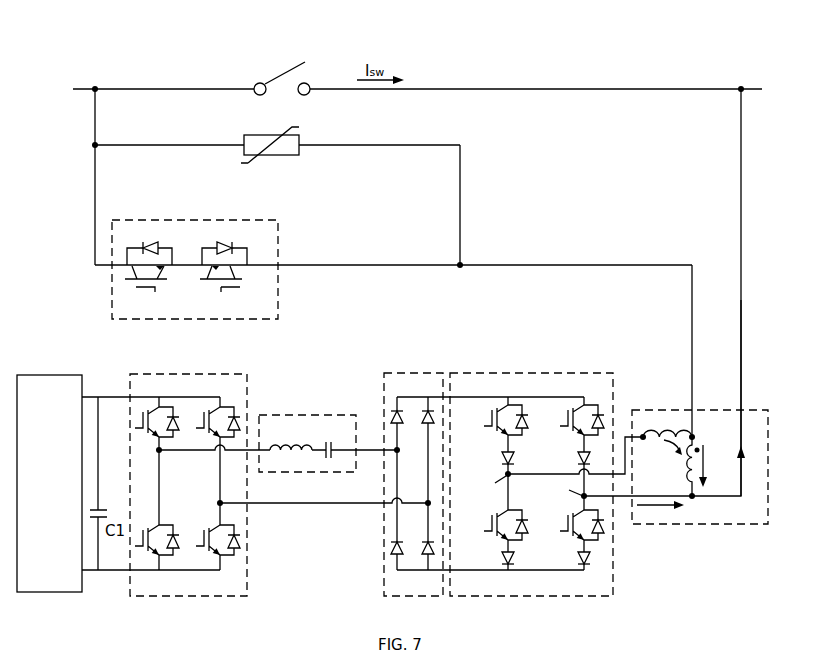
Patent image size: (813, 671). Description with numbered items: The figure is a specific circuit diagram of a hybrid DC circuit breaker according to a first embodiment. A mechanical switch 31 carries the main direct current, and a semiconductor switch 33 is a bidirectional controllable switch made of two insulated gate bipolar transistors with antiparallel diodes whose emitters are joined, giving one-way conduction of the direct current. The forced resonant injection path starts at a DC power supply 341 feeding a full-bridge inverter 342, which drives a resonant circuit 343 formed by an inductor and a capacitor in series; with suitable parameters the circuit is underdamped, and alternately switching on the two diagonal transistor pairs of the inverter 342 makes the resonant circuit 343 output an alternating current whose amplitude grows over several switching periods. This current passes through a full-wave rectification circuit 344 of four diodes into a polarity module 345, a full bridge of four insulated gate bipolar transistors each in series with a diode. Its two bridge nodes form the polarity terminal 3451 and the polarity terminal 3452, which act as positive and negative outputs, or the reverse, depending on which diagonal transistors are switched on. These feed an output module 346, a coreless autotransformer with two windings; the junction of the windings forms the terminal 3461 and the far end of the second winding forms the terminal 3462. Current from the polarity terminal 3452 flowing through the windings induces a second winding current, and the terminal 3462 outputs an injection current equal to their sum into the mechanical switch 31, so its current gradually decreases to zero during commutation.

The mechanical switch 31 is at (277, 62).
The semiconductor switch 33 is at (195, 218).
The DC power supply 341 is at (63, 375).
The inverter 342 is at (187, 374).
The resonant circuit 343 is at (293, 415).
The rectification circuit 344 is at (412, 373).
The polarity module 345 is at (555, 373).
The output module 346 is at (755, 410).
The polarity terminal 3451 is at (618, 470).
The polarity terminal 3452 is at (622, 497).
The terminal 3461 is at (692, 297).
The terminal 3462 is at (741, 297).